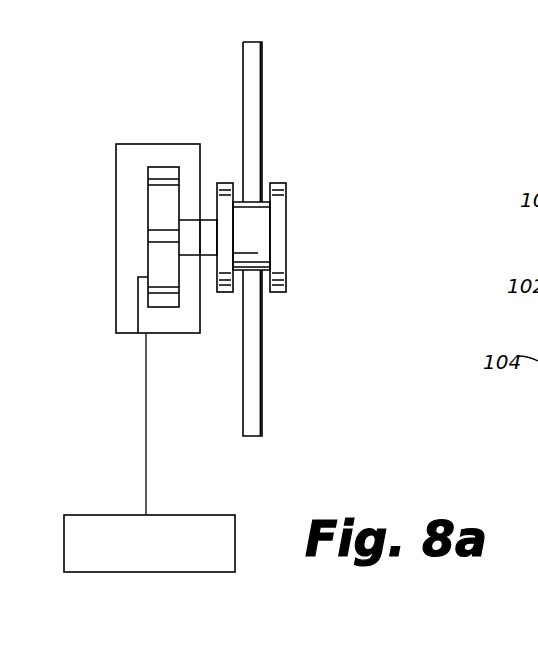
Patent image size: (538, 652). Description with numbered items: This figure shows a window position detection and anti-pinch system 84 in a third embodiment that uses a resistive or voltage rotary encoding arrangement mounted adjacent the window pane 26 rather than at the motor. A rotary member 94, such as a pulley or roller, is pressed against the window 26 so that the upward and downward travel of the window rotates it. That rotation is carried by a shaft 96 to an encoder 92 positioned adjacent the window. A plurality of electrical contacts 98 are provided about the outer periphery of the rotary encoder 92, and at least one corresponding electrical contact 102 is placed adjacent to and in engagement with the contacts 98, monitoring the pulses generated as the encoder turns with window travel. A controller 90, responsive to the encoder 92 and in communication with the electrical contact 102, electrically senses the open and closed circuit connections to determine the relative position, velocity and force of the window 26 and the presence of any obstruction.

The window pane 26 is at (250, 66).
The window position detection and anti-pinch system 84 is at (316, 375).
The controller 90 is at (195, 572).
The encoder 92 is at (157, 165).
The rotary member 94 is at (286, 184).
The shaft 96 is at (209, 220).
The electrical contacts 98 is at (147, 185).
The electrical contact 102 is at (138, 316).